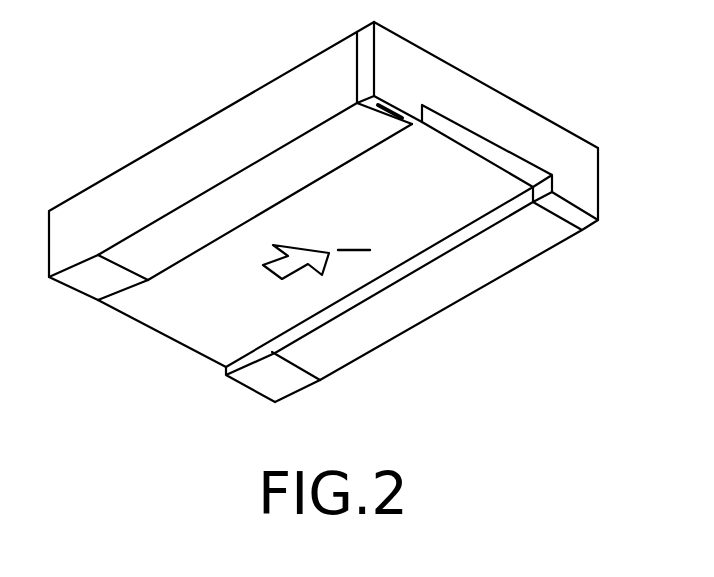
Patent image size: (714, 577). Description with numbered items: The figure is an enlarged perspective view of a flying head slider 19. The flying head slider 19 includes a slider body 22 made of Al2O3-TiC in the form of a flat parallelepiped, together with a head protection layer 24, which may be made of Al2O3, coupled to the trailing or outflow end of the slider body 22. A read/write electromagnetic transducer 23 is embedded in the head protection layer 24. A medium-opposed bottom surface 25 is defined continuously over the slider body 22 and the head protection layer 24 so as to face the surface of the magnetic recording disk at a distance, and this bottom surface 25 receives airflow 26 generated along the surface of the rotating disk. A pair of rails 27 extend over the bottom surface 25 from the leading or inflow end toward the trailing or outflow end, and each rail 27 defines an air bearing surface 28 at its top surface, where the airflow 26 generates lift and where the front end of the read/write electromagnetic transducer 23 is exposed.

The flying head slider 19 is at (249, 75).
The slider body 22 is at (569, 236).
The read/write electromagnetic transducer 23 is at (380, 109).
The head protection layer 24 is at (600, 161).
The bottom surface 25 is at (353, 230).
The airflow 26 is at (268, 271).
The rail 27 is at (187, 258).
The air bearing surface 28 is at (362, 147).